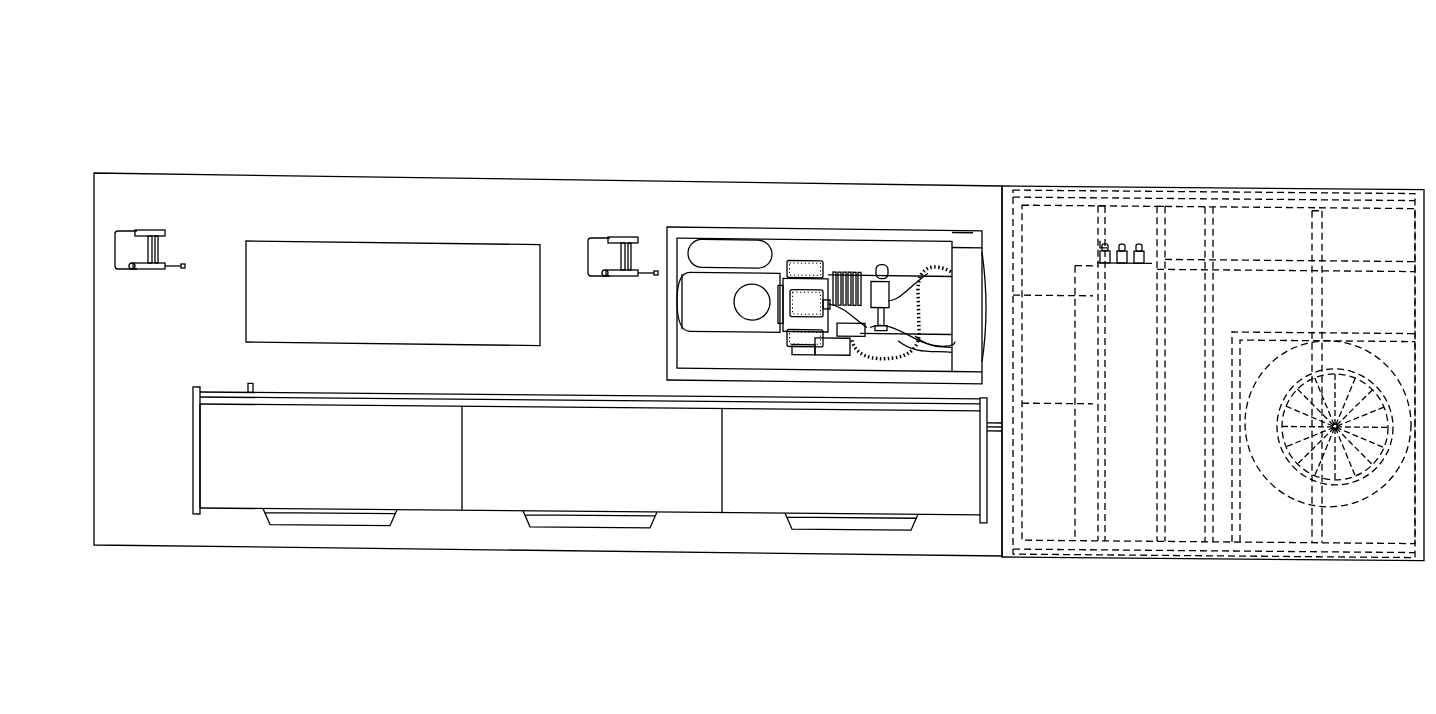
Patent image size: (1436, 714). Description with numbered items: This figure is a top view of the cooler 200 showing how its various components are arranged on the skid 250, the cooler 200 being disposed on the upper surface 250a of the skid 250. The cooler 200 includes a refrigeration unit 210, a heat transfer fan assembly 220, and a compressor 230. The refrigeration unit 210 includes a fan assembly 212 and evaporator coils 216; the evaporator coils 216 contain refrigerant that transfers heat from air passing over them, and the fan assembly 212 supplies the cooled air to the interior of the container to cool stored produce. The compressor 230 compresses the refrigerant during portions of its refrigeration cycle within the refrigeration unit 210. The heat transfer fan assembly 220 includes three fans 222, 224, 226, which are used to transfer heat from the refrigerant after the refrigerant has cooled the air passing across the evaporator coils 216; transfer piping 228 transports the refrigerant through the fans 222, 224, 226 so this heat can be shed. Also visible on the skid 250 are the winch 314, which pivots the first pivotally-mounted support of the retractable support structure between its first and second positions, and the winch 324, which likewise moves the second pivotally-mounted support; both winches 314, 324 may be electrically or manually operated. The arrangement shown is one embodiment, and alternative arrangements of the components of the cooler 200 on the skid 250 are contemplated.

The cooler 200 is at (780, 120).
The refrigeration unit 210 is at (1188, 187).
The fan assembly 212 is at (1283, 515).
The evaporator coils 216 is at (1128, 515).
The heat transfer fan assembly 220 is at (182, 457).
The fan 222 is at (309, 478).
The fan 224 is at (571, 478).
The fan 226 is at (833, 478).
The transfer piping 228 is at (568, 392).
The compressor 230 is at (856, 227).
The skid 250 is at (440, 177).
The upper surface 250a is at (300, 221).
The winch 314 is at (140, 231).
The winch 324 is at (600, 238).